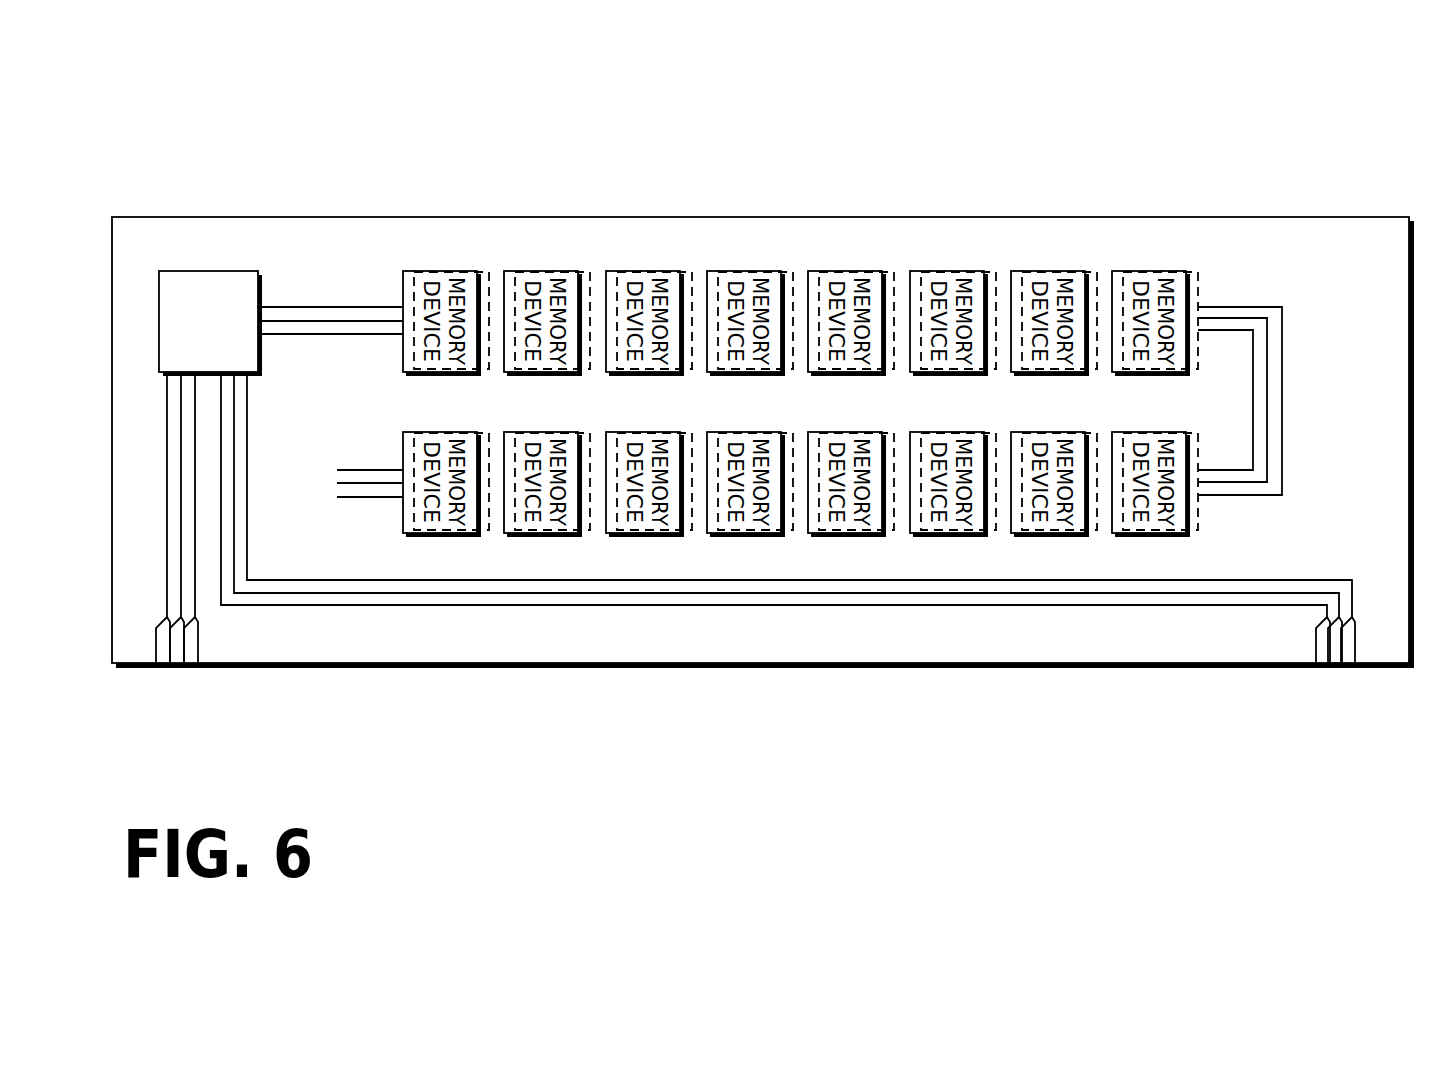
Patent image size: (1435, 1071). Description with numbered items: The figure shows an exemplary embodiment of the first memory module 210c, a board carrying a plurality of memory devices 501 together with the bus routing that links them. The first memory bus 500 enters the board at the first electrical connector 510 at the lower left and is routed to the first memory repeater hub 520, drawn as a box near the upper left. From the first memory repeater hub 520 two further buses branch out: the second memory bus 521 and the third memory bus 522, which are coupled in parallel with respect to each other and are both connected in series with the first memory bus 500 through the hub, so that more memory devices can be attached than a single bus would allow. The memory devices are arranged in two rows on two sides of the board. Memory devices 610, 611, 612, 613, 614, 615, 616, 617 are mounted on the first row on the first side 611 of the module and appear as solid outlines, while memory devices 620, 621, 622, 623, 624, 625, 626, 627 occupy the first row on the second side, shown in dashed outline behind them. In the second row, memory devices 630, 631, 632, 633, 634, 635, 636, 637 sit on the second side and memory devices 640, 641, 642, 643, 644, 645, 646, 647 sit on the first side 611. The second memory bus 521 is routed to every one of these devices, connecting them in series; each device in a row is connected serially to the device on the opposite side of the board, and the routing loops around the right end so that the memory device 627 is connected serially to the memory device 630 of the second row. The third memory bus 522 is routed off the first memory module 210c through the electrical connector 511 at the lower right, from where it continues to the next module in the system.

The first memory module 210c is at (1266, 147).
The first memory bus 500 is at (161, 485).
The memory devices 501 is at (1062, 216).
The first electrical connector 510 is at (232, 708).
The electrical connector 511 is at (1378, 708).
The first memory repeater hub 520 is at (195, 297).
The second memory bus 521 is at (302, 300).
The third memory bus 522 is at (253, 467).
The memory device 610 is at (428, 278).
The first side 611 is at (1353, 222).
The memory device 612 is at (631, 278).
The memory device 613 is at (732, 278).
The memory device 614 is at (833, 278).
The memory device 615 is at (935, 278).
The memory device 616 is at (1036, 278).
The memory device 617 is at (1137, 278).
The memory device 620 is at (485, 274).
The memory device 621 is at (586, 274).
The memory device 622 is at (688, 274).
The memory device 623 is at (789, 274).
The memory device 624 is at (890, 274).
The memory device 625 is at (992, 274).
The memory device 626 is at (1093, 274).
The memory device 627 is at (1194, 274).
The memory device 630 is at (1196, 535).
The memory device 631 is at (1095, 535).
The memory device 632 is at (994, 535).
The memory device 633 is at (892, 535).
The memory device 634 is at (791, 535).
The memory device 635 is at (690, 535).
The memory device 636 is at (588, 535).
The memory device 637 is at (487, 535).
The memory device 640 is at (1142, 534).
The memory device 641 is at (1041, 534).
The memory device 642 is at (940, 534).
The memory device 643 is at (838, 534).
The memory device 644 is at (737, 534).
The memory device 645 is at (636, 534).
The memory device 646 is at (534, 534).
The memory device 647 is at (433, 534).